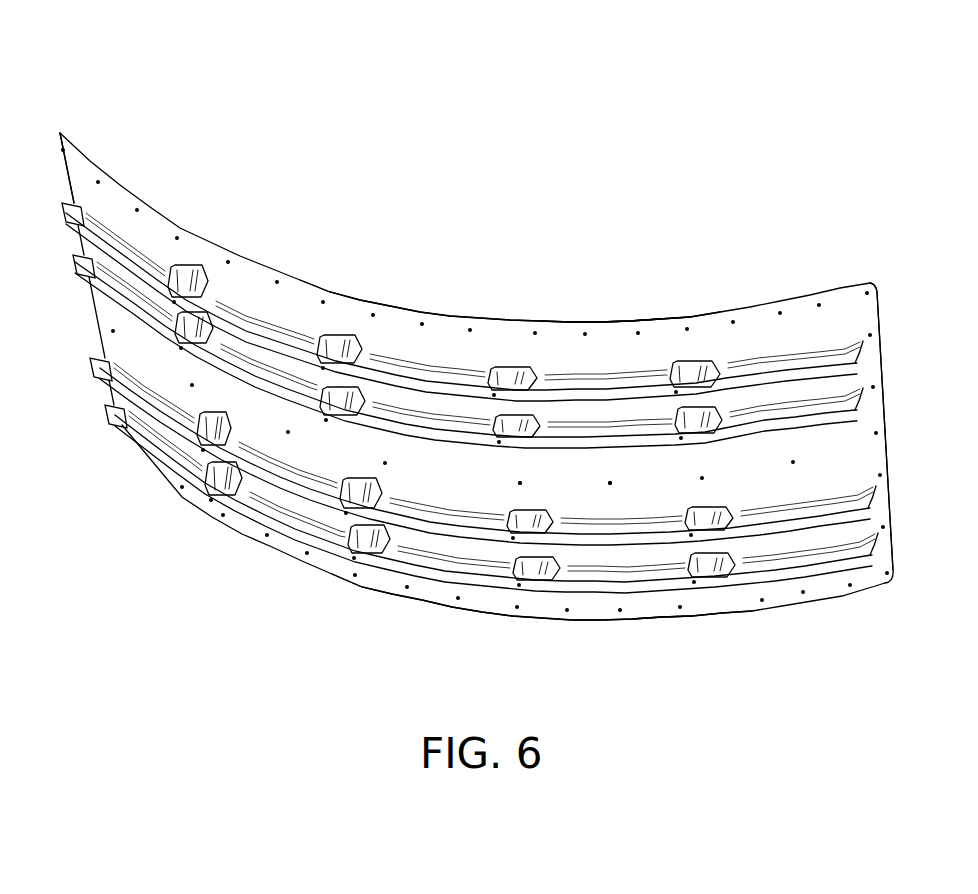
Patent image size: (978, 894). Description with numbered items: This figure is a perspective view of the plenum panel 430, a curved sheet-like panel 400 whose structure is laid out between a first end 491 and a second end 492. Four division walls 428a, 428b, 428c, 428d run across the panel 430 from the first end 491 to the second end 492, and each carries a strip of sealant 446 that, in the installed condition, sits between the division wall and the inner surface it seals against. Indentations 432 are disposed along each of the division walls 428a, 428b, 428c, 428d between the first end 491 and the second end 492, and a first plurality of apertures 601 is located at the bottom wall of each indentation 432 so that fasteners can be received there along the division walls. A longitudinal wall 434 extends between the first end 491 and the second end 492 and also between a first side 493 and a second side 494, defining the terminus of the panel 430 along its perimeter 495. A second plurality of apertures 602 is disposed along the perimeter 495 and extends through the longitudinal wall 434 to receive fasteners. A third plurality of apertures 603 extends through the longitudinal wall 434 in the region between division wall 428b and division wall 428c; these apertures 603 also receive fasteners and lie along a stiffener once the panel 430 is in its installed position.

The panel 400 is at (718, 313).
The panel 430 is at (562, 228).
The longitudinal wall 434 is at (602, 340).
The first end 491 is at (63, 95).
The second end 492 is at (860, 240).
The first side 493 is at (589, 275).
The second side 494 is at (624, 650).
The perimeter 495 is at (437, 602).
The division wall 428a is at (85, 220).
The division wall 428b is at (110, 282).
The division wall 428c is at (107, 363).
The division wall 428d is at (132, 427).
The indentations 432 is at (342, 395).
The strip of sealant 446 is at (248, 335).
The first plurality of apertures 601 is at (713, 580).
The second plurality of apertures 602 is at (717, 603).
The third plurality of apertures 603 is at (629, 486).